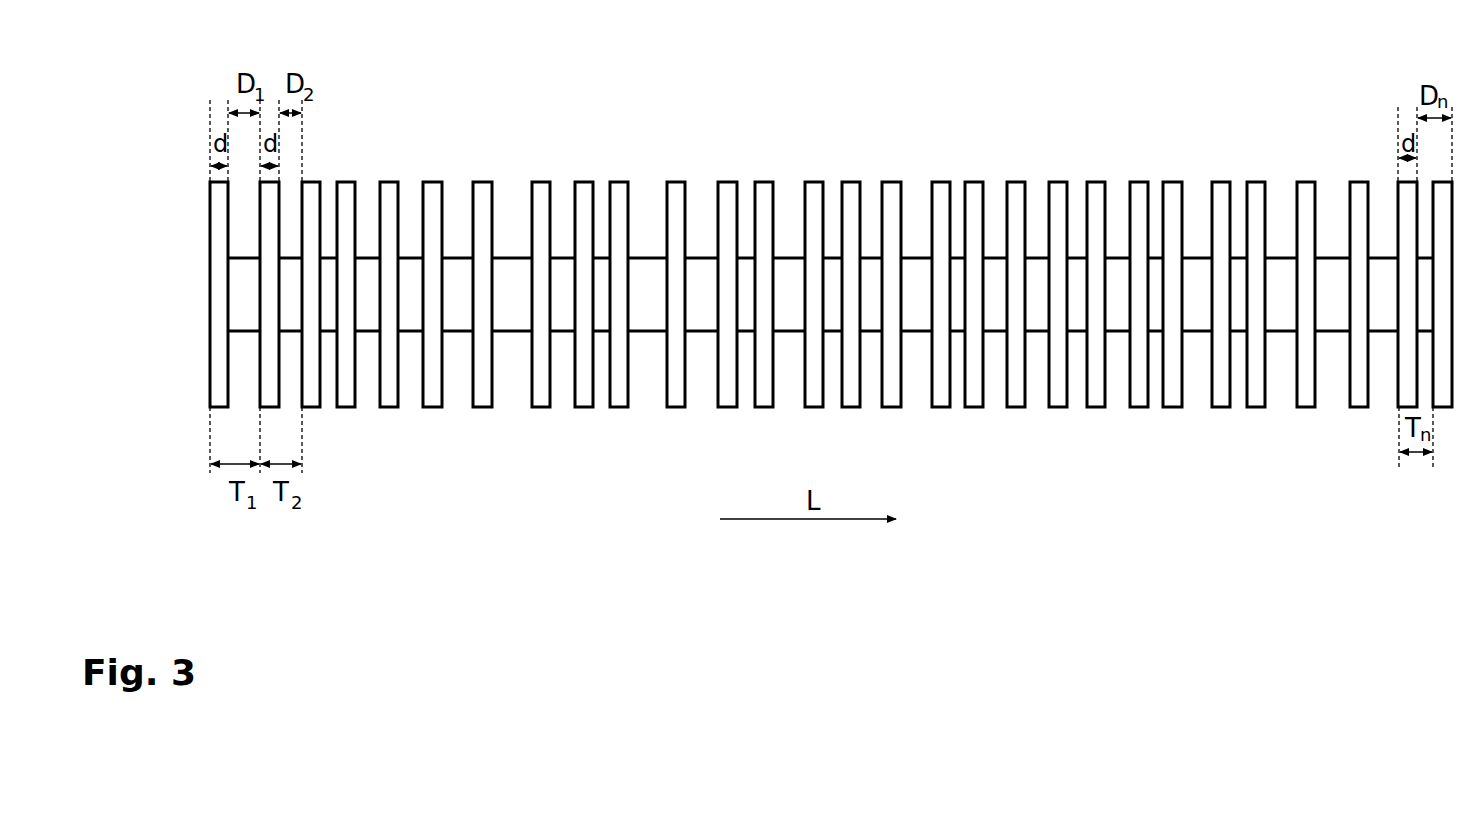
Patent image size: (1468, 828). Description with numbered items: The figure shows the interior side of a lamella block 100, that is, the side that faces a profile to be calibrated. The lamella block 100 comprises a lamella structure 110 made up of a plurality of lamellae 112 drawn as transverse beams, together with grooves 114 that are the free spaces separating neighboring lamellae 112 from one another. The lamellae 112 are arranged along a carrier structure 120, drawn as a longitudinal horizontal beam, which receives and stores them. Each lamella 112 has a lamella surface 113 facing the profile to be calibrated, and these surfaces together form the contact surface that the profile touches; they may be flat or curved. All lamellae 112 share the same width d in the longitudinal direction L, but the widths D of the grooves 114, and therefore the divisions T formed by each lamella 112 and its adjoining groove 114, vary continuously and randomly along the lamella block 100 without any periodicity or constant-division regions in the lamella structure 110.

The lamella block 100 is at (873, 78).
The lamella structure 110 is at (644, 431).
The lamella 112 is at (540, 188).
The lamella surface 113 is at (483, 237).
The groove 114 is at (565, 195).
The carrier structure 120 is at (513, 318).